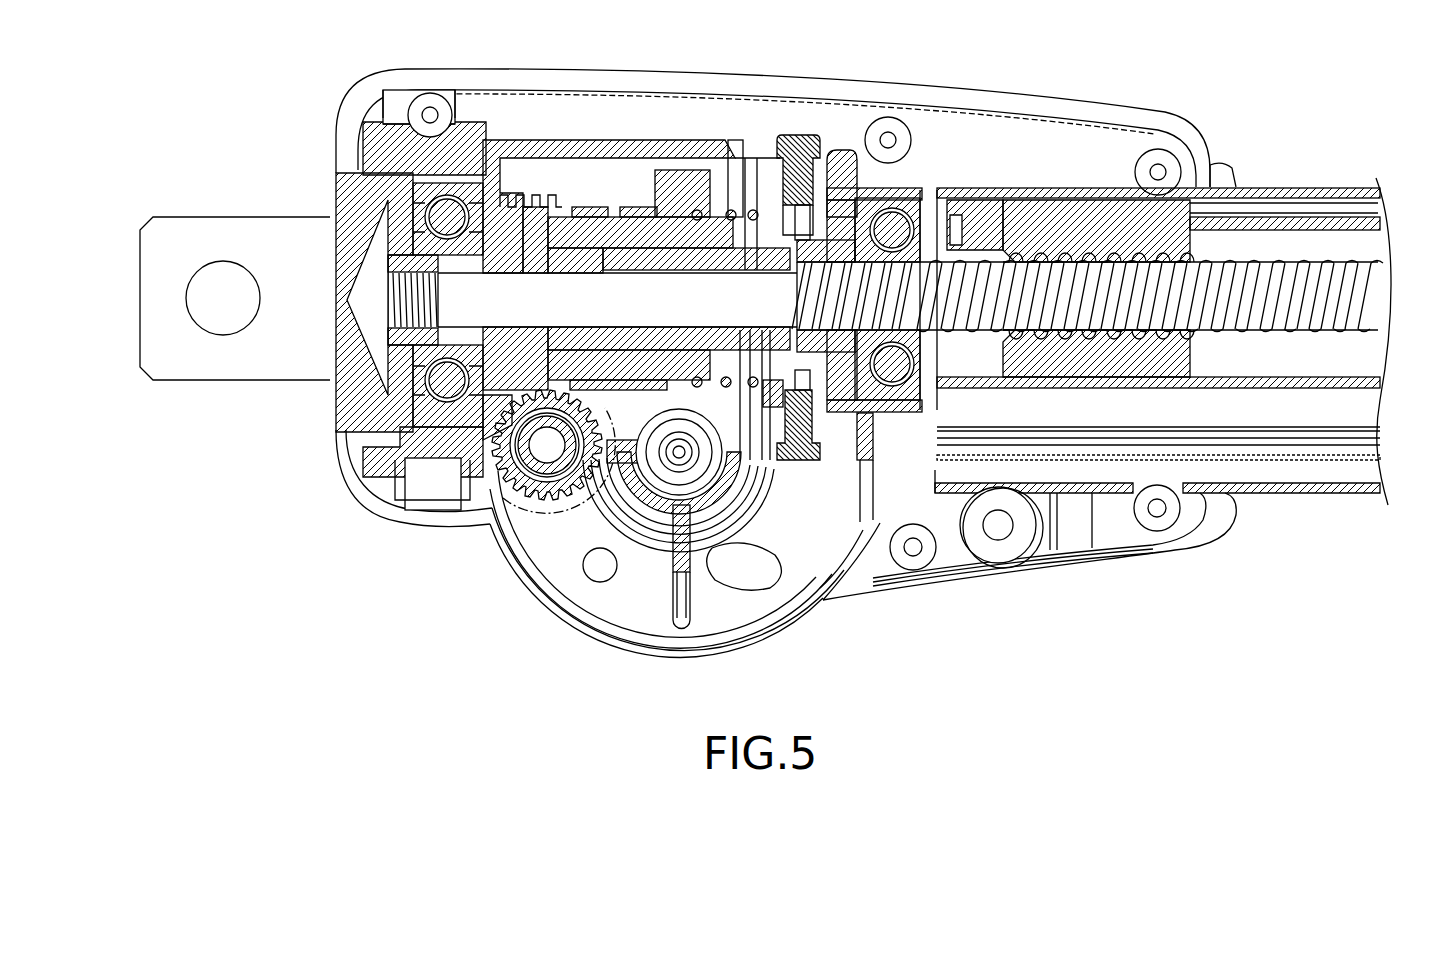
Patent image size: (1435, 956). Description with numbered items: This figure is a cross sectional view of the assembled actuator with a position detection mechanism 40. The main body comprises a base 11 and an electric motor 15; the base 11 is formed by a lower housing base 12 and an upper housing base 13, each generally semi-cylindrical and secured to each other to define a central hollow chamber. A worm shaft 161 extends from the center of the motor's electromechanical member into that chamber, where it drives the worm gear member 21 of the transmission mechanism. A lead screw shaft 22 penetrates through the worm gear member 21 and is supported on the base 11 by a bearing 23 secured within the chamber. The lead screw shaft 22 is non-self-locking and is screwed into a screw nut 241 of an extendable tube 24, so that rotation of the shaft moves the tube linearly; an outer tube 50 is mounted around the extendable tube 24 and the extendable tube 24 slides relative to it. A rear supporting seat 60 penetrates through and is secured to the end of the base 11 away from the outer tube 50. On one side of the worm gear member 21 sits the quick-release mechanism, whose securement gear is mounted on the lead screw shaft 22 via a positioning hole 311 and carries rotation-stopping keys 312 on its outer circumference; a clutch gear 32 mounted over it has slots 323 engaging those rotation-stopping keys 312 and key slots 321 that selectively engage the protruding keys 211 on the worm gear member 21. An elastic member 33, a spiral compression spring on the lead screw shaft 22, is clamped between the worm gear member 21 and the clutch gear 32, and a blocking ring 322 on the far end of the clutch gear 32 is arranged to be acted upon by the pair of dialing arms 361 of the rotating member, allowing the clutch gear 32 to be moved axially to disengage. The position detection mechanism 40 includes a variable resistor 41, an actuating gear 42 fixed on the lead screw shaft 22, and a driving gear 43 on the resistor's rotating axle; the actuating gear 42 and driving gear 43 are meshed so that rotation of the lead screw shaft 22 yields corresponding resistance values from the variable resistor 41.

The rear supporting seat 60 is at (240, 216).
The electric motor 15 is at (1022, 88).
The lower housing base 12 is at (387, 482).
The actuating gear 42 is at (485, 180).
The base 11 is at (540, 128).
The upper housing base 13 is at (570, 145).
The worm gear member 21 is at (677, 163).
The elastic member 33 is at (738, 158).
The blocking ring 322 is at (767, 134).
The slots 323 is at (810, 200).
The rotation-stopping keys 312 is at (840, 180).
The positioning hole 311 is at (873, 190).
The clutch gear 32 is at (893, 405).
The lead screw shaft 22 is at (1237, 256).
The screw nut 241 is at (1035, 217).
The extendable tube 24 is at (1208, 222).
The outer tube 50 is at (1290, 186).
The bearing 23 is at (930, 430).
The dialing arms 361 is at (890, 525).
The key slots 321 is at (820, 462).
The driving gear 43 is at (497, 508).
The position detection mechanism 40 is at (528, 527).
The variable resistor 41 is at (570, 527).
The worm shaft 161 is at (676, 500).
The protruding keys 211 is at (780, 458).